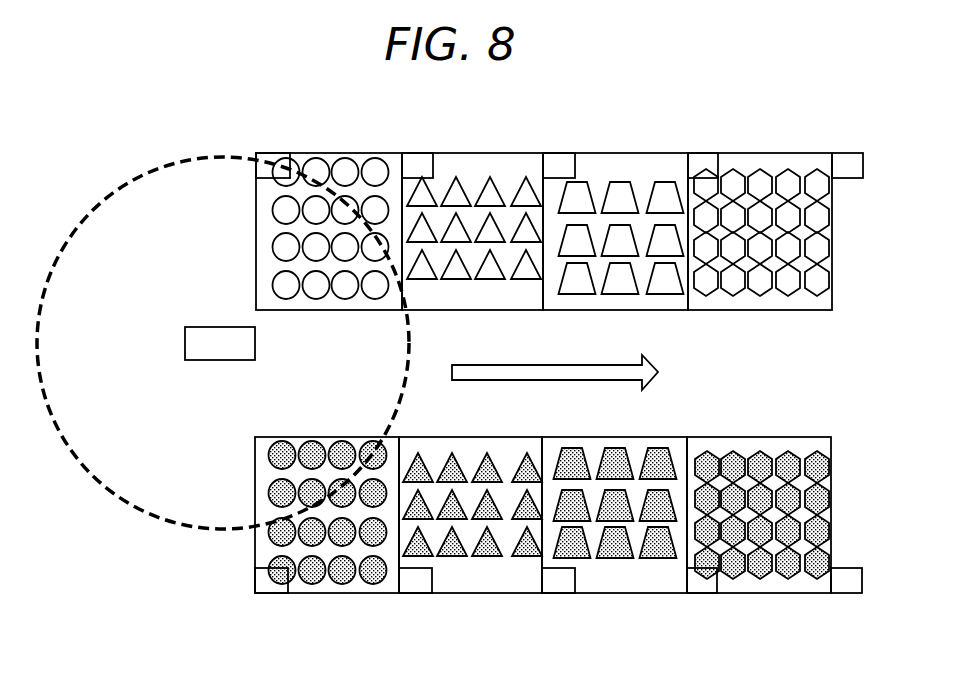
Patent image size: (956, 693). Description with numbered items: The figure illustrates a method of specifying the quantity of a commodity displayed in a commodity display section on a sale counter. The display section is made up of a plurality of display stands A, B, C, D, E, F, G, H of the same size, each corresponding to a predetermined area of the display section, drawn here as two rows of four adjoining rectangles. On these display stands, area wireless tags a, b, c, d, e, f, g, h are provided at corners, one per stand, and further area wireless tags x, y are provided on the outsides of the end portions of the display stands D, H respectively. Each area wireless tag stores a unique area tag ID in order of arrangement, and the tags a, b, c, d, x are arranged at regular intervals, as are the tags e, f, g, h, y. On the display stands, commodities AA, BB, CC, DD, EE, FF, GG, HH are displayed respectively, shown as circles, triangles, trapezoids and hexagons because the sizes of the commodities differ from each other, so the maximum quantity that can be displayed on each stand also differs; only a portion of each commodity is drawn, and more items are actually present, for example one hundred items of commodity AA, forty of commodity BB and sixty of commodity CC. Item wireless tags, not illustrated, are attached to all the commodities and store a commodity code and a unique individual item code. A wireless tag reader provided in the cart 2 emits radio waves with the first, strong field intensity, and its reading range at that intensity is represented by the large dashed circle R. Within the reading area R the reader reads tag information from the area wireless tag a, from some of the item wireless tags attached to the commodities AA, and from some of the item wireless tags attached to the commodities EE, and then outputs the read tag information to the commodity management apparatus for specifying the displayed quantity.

The reading range R is at (174, 157).
The cart 2 is at (218, 326).
The area wireless tag a is at (262, 165).
The display stand A is at (327, 153).
The area wireless tag b is at (415, 165).
The display stand B is at (470, 153).
The area wireless tag c is at (556, 165).
The display stand C is at (622, 153).
The area wireless tag d is at (707, 165).
The display stand D is at (770, 153).
The area wireless tag x is at (846, 165).
The commodity AA is at (319, 295).
The commodity BB is at (455, 292).
The commodity CC is at (622, 293).
The commodity DD is at (793, 290).
The commodity EE is at (320, 440).
The commodity FF is at (490, 462).
The commodity GG is at (612, 457).
The commodity HH is at (761, 452).
The area wireless tag e is at (262, 585).
The display stand E is at (322, 594).
The area wireless tag f is at (413, 585).
The display stand F is at (475, 594).
The area wireless tag g is at (553, 585).
The display stand G is at (624, 594).
The area wireless tag h is at (699, 585).
The display stand H is at (762, 594).
The area wireless tag y is at (843, 585).